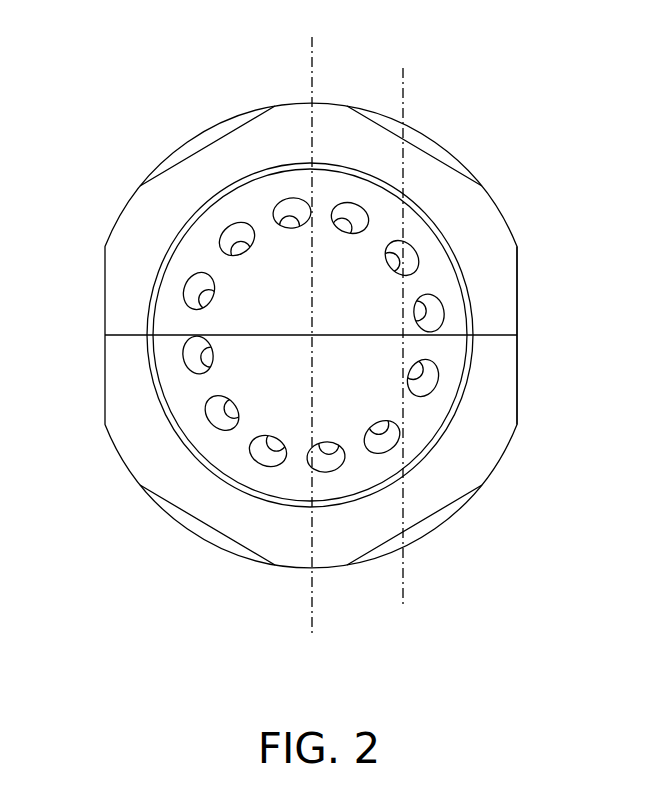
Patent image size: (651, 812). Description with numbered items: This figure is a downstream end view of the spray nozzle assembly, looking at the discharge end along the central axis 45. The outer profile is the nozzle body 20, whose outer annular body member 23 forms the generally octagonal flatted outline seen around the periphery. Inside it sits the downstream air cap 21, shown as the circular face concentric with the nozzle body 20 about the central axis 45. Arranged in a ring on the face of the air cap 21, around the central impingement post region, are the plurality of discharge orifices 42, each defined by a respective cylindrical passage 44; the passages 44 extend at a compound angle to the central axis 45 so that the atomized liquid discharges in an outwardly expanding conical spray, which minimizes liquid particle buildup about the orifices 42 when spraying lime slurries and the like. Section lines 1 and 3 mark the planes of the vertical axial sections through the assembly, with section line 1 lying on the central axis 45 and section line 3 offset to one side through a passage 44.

The section line 1- 1 is at (312, 37).
The section line 3- 3 is at (403, 68).
The nozzle body 20 is at (498, 207).
The air cap 21 is at (231, 483).
The outer annular body member 23 is at (517, 308).
The discharge orifices 42 is at (336, 306).
The cylindrical passages 44 is at (435, 308).
The central axis 45 is at (311, 333).